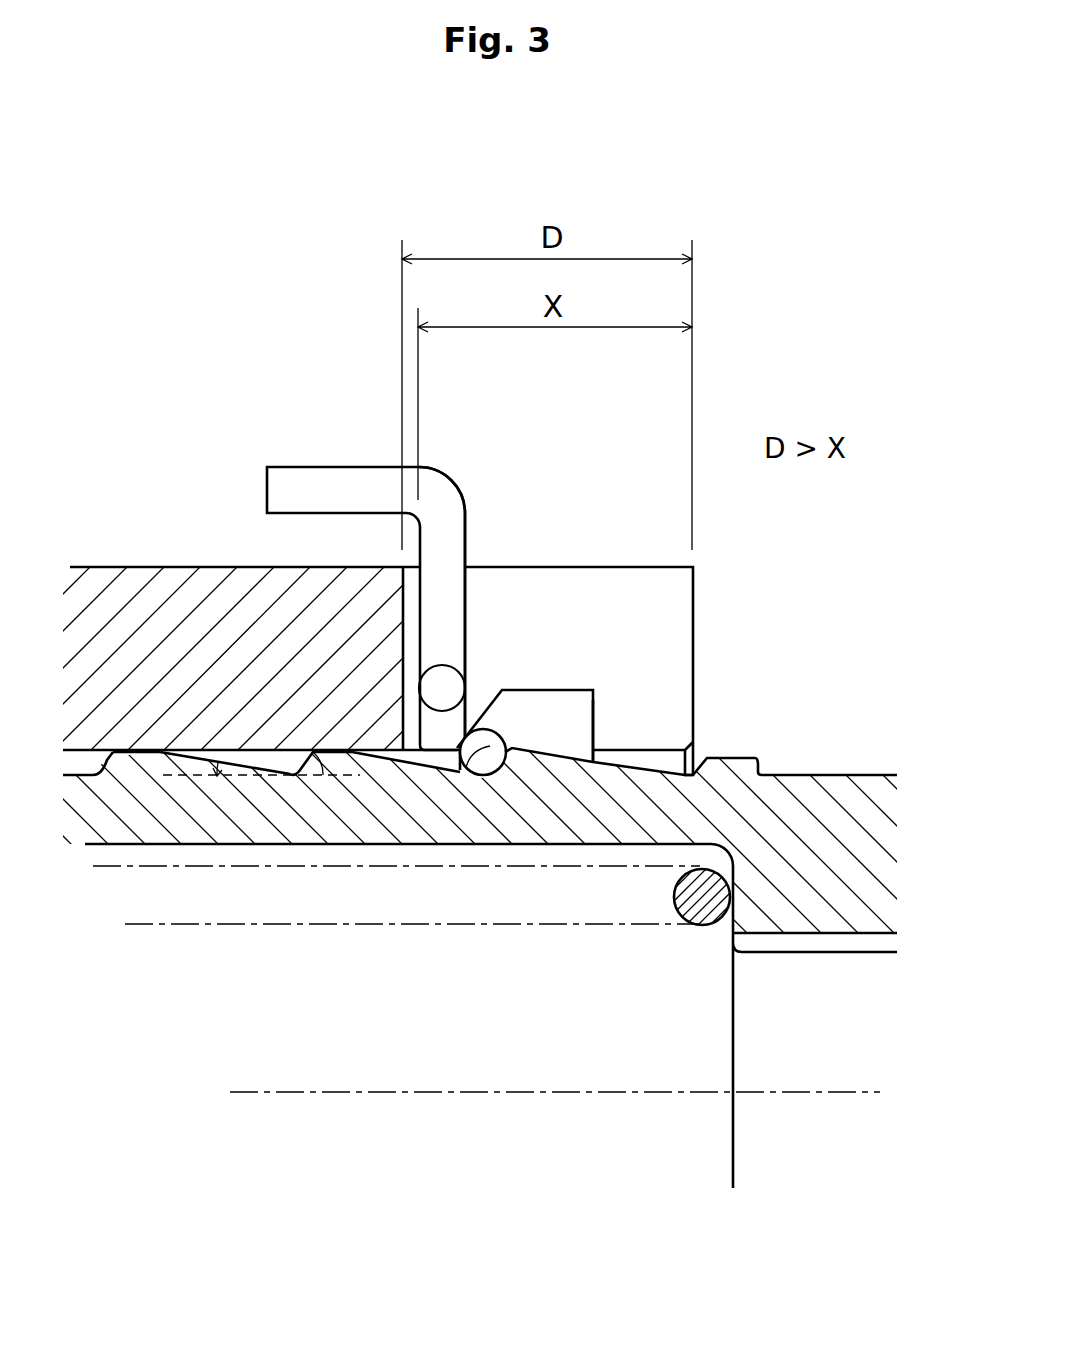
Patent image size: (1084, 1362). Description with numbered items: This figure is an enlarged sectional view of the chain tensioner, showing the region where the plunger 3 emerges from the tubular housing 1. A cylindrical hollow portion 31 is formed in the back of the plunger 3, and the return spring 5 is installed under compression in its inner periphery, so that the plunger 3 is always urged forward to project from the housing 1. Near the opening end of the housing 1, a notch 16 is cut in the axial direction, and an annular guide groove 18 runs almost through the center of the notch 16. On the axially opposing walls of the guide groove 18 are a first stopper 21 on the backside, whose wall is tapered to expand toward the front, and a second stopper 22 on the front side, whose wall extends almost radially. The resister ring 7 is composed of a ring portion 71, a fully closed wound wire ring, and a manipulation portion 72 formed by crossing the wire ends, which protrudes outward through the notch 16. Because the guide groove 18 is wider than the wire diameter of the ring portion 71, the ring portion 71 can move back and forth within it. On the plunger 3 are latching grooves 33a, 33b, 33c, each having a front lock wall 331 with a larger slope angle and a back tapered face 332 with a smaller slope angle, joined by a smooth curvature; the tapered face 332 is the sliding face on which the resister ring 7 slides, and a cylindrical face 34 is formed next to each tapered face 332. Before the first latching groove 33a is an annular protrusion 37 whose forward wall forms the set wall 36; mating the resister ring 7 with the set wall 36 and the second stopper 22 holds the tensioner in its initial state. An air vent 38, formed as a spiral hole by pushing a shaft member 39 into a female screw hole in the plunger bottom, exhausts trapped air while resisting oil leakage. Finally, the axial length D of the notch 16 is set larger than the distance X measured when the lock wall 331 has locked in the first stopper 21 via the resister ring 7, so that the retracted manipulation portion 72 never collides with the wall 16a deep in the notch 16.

The housing 1 is at (263, 552).
The plunger 3 is at (866, 761).
The return spring 5 is at (687, 927).
The resister ring 7 is at (310, 449).
The notch 16 is at (662, 600).
The wall deep in the notch 16a is at (463, 520).
The annular guide groove 18 is at (528, 690).
The first stopper 21 is at (487, 776).
The second stopper 22 is at (587, 720).
The hollow portion 31 is at (90, 810).
The first latching groove 33a is at (649, 781).
The latching groove 33b is at (429, 779).
The latching groove 33c is at (160, 765).
The lock wall 331 is at (300, 757).
The tapered face 332 is at (192, 752).
The cylindrical face 34 is at (110, 755).
The set wall 36 is at (765, 773).
The annular protrusion 37 is at (725, 757).
The air vent 38 is at (833, 943).
The shaft member 39 is at (840, 1062).
The ring portion 71 is at (490, 745).
The manipulation portion 72 is at (440, 507).